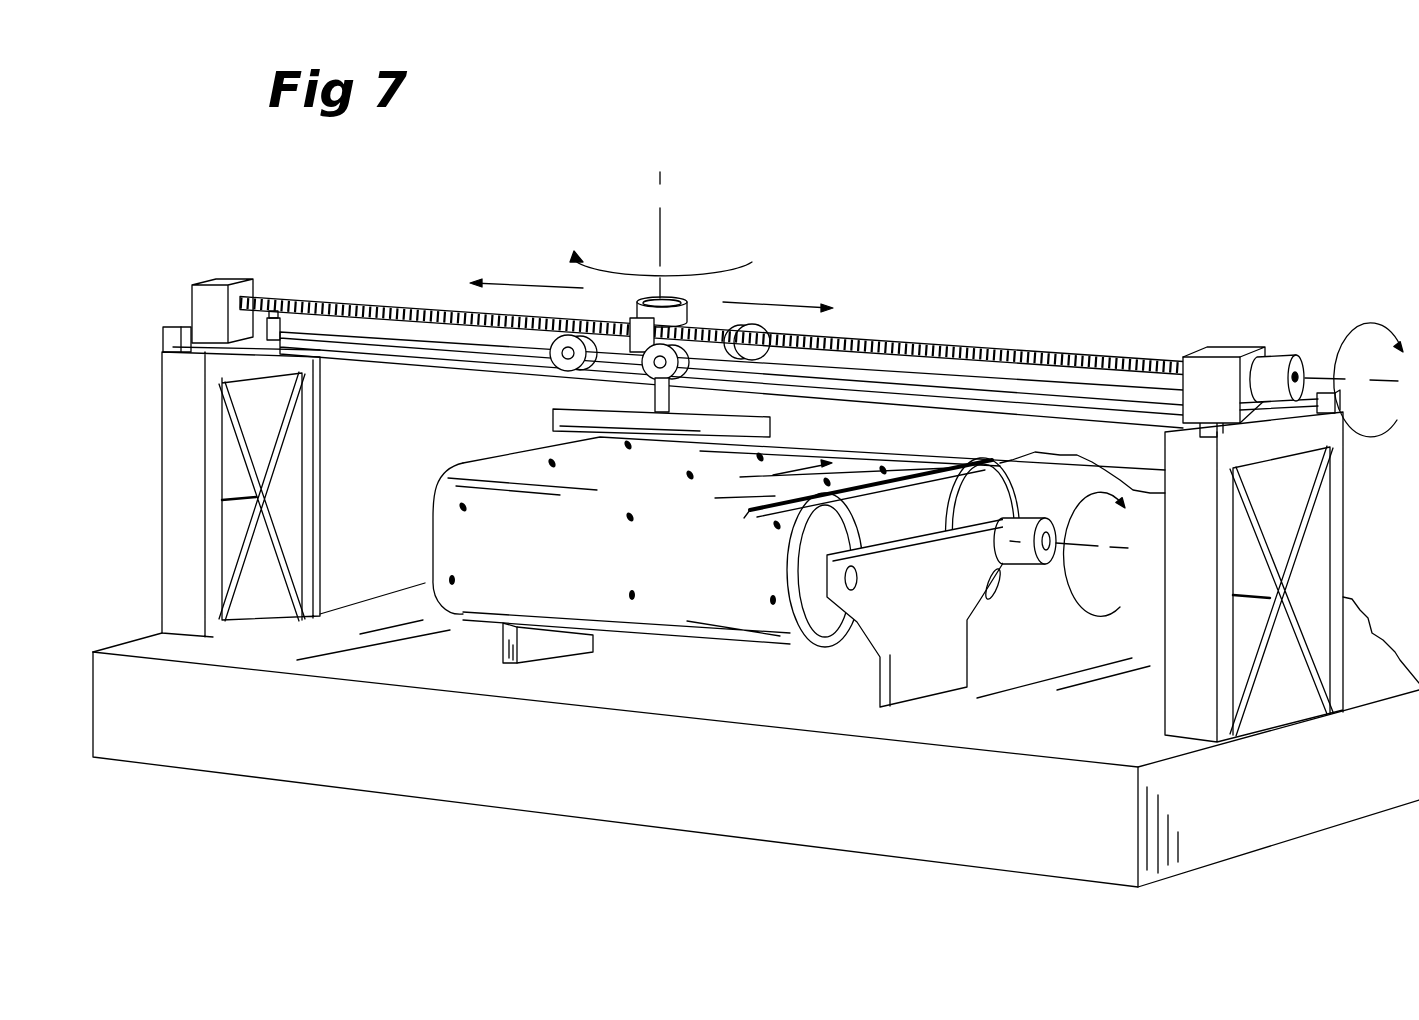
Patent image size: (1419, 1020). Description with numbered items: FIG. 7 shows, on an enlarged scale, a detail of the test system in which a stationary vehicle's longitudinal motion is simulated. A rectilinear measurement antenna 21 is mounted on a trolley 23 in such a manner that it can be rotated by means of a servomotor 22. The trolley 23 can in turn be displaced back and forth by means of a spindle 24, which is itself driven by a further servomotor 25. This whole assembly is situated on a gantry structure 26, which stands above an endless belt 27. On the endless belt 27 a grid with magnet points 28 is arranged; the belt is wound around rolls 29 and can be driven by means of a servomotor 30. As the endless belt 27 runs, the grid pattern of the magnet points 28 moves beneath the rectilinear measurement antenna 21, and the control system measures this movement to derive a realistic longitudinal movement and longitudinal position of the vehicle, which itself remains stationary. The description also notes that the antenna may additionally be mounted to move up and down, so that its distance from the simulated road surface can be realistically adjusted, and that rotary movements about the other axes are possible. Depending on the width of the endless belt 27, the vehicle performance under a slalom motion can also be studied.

The rectilinear measurement antenna 21 is at (553, 415).
The servomotor 22 is at (687, 318).
The trolley 23 is at (612, 356).
The spindle 24 is at (926, 350).
The servomotor 25 is at (1305, 360).
The gantry structure 26 is at (160, 320).
The endless belt 27 is at (912, 472).
The magnet points 28 is at (772, 604).
The rolls 29 is at (987, 487).
The servomotor 30 is at (1047, 590).